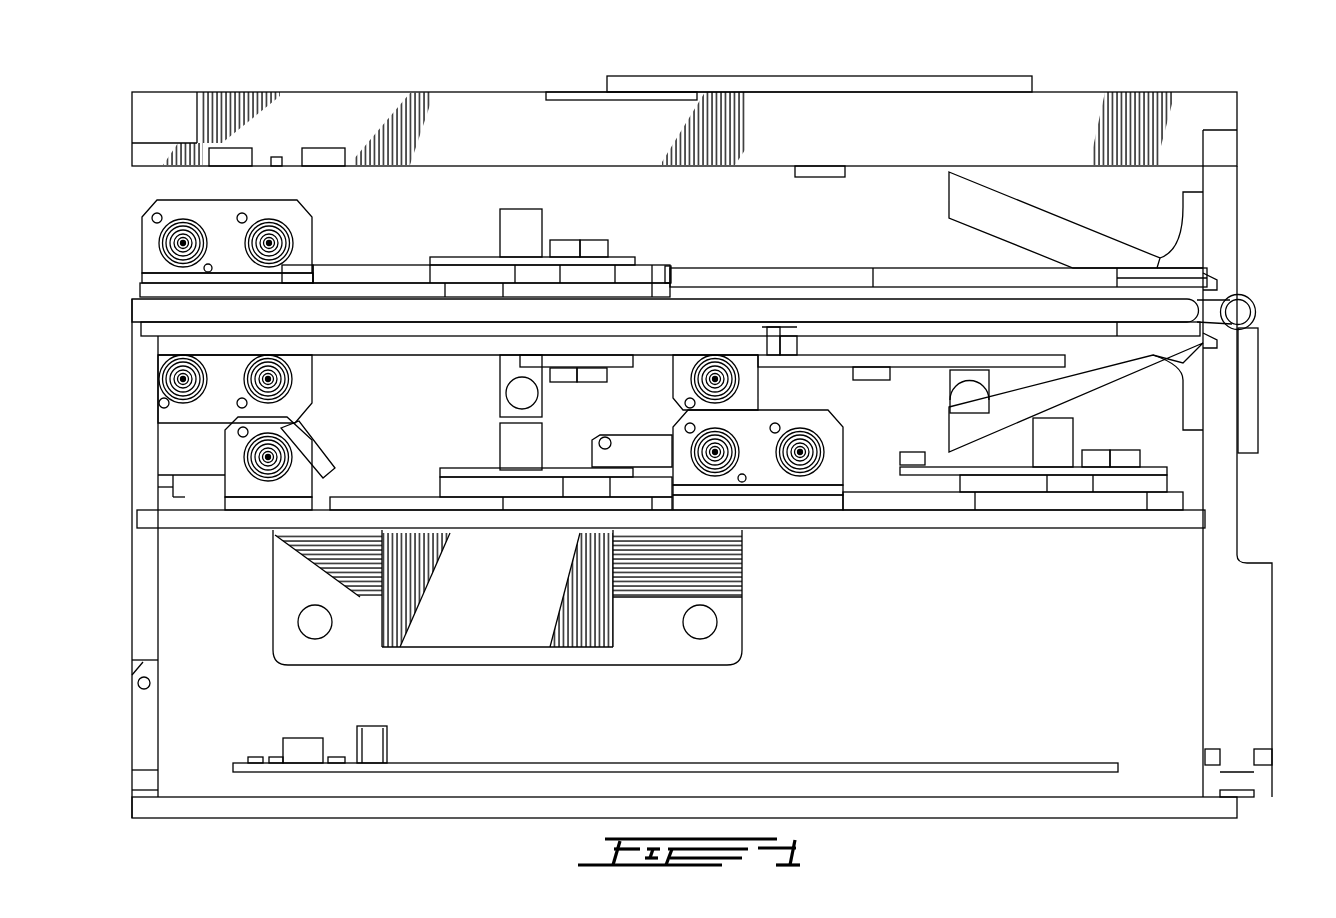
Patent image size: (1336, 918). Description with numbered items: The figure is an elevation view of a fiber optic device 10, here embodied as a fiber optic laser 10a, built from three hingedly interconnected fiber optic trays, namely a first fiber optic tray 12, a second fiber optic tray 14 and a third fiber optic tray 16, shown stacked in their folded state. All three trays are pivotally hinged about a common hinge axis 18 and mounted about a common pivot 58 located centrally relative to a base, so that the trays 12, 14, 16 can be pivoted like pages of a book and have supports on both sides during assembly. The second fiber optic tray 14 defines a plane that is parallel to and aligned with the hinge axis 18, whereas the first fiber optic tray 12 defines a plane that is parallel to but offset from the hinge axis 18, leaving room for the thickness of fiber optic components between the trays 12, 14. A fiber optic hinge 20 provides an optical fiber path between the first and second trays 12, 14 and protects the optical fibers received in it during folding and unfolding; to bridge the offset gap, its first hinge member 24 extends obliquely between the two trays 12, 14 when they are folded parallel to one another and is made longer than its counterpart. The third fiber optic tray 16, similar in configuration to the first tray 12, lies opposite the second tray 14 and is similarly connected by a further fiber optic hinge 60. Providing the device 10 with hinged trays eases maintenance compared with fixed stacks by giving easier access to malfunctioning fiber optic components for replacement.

The fiber optic device 10 is at (1075, 69).
The fiber optic laser 10a is at (1188, 92).
The first fiber optic tray 12 is at (912, 517).
The second fiber optic tray 14 is at (893, 284).
The third fiber optic tray 16 is at (833, 128).
The hinge axis 18 is at (1240, 310).
The fiber optic hinge 20 is at (1108, 385).
The first hinge member 24 is at (1058, 390).
The common pivot 58 is at (1256, 316).
The fiber optic hinge 60 is at (1098, 229).